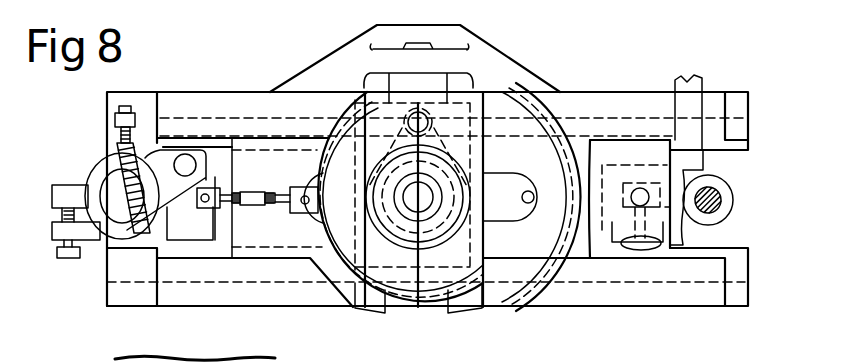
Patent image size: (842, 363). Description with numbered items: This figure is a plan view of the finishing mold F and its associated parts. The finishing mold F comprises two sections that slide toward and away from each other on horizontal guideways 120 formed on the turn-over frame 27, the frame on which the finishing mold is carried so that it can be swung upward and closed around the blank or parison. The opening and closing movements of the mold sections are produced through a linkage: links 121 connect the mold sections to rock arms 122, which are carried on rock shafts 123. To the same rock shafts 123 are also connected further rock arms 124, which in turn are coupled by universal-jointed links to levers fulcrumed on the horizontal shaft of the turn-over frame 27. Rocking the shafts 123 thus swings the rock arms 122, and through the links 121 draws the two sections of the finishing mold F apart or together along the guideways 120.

The turn-over frame 27 is at (516, 83).
The horizontal guideways 120 is at (122, 252).
The links 121 is at (285, 172).
The rock arms 122 is at (190, 187).
The rock shafts 123 is at (96, 172).
The rock arms 124 is at (163, 150).
The finishing mold F is at (407, 282).